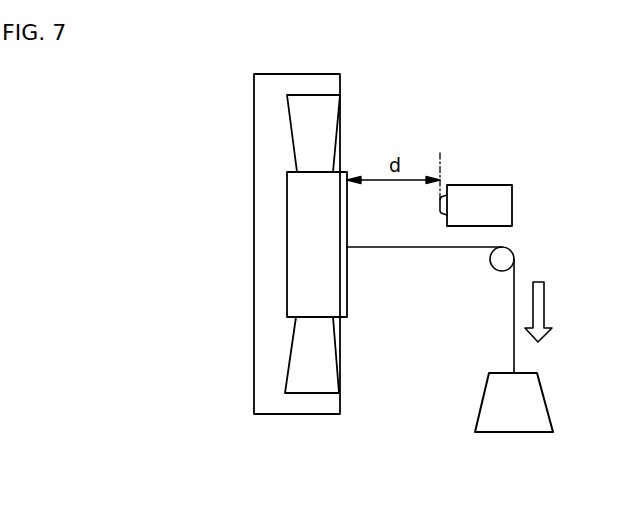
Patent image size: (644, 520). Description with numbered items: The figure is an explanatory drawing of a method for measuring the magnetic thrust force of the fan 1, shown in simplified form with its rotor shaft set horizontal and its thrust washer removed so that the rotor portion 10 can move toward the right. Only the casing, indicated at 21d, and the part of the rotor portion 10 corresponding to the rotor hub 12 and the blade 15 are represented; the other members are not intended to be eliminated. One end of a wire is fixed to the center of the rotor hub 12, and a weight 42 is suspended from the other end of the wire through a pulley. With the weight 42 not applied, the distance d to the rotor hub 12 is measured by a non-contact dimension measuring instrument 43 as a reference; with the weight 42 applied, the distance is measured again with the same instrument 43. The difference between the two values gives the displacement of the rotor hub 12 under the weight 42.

The fan 1 is at (322, 283).
The rotor portion 10 is at (365, 235).
The rotor hub 12 is at (342, 220).
The blade 15 is at (325, 110).
The casing 21d is at (297, 415).
The weight 42 is at (536, 408).
The non-contact dimension measuring instrument 43 is at (500, 203).